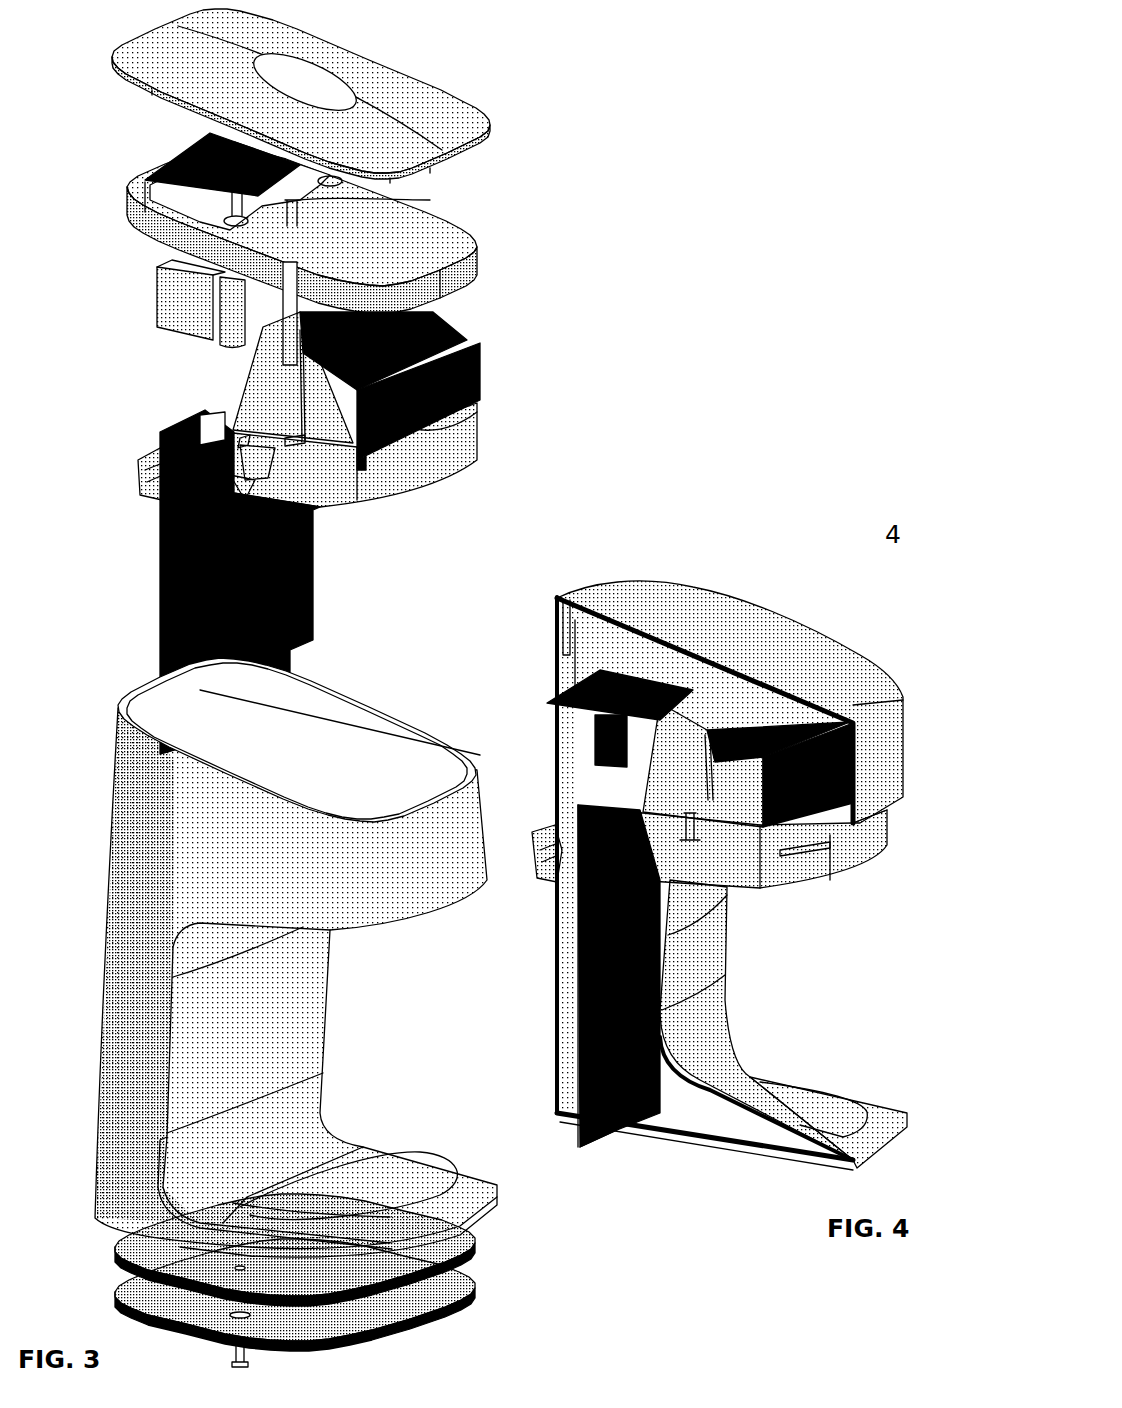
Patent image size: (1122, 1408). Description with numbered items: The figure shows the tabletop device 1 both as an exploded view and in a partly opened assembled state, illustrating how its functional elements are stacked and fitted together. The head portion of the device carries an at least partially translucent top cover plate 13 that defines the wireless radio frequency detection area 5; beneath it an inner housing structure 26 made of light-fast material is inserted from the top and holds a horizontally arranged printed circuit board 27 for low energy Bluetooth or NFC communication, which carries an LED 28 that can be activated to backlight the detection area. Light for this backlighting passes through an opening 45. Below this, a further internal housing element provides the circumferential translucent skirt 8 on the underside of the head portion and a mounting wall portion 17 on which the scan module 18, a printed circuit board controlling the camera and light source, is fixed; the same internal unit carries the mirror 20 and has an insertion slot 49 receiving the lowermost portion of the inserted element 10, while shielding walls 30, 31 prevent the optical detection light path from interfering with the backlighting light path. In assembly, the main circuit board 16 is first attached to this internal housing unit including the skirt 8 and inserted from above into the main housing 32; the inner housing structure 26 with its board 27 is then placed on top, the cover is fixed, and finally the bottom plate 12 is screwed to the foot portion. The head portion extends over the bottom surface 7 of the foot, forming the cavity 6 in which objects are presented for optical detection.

In FIG. 3, the tabletop device 1 is at (440, 28).
In FIG. 4, the tabletop device 1 is at (688, 528).
In FIG. 3, the wireless radio frequency detection area 5 is at (290, 75).
In FIG. 3, the cavity 6 is at (292, 1068).
In FIG. 4, the cavity 6 is at (774, 1058).
In FIG. 3, the bottom surface 7 is at (410, 1170).
In FIG. 4, the bottom surface 7 is at (805, 1097).
In FIG. 3, the circumferential translucent skirt 8 is at (470, 458).
In FIG. 4, the circumferential translucent skirt 8 is at (820, 855).
In FIG. 3, the reservoir 10 is at (460, 385).
In FIG. 4, the reservoir 10 is at (830, 770).
In FIG. 3, the bottom plate 12 is at (420, 1300).
In FIG. 4, the bottom plate 12 is at (700, 1150).
In FIG. 3, the top cover plate 13 is at (478, 113).
In FIG. 4, the top cover plate 13 is at (750, 612).
In FIG. 3, the main circuit board 16 is at (180, 630).
In FIG. 4, the main circuit board 16 is at (578, 1035).
In FIG. 3, the mounting wall portion 17 is at (205, 470).
In FIG. 4, the mounting wall portion 17 is at (668, 893).
In FIG. 3, the scan module 18 is at (140, 478).
In FIG. 4, the scan module 18 is at (540, 858).
In FIG. 3, the mirror 20 is at (445, 325).
In FIG. 4, the mirror 20 is at (790, 735).
In FIG. 3, the inner housing structure 26 is at (470, 240).
In FIG. 4, the inner housing structure 26 is at (580, 630).
In FIG. 3, the printed circuit board 27 is at (205, 150).
In FIG. 4, the printed circuit board 27 is at (625, 690).
In FIG. 3, the LED 28 is at (228, 130).
In FIG. 3, the shielding wall 30 is at (190, 308).
In FIG. 4, the shielding wall 30 is at (592, 742).
In FIG. 3, the shielding wall 31 is at (260, 400).
In FIG. 4, the shielding wall 31 is at (727, 790).
In FIG. 3, the main housing 32 is at (122, 1005).
In FIG. 4, the main housing 32 is at (557, 965).
In FIG. 3, the opening for light path and backlighting 45 is at (305, 218).
In FIG. 4, the insertion slot 49 is at (810, 810).